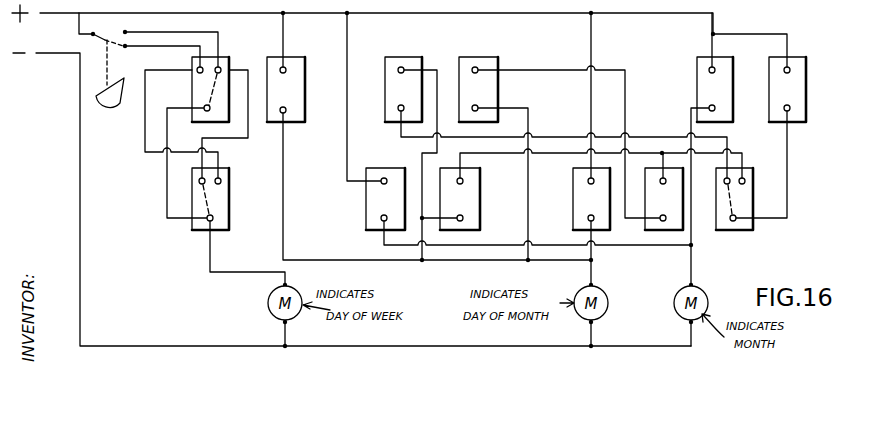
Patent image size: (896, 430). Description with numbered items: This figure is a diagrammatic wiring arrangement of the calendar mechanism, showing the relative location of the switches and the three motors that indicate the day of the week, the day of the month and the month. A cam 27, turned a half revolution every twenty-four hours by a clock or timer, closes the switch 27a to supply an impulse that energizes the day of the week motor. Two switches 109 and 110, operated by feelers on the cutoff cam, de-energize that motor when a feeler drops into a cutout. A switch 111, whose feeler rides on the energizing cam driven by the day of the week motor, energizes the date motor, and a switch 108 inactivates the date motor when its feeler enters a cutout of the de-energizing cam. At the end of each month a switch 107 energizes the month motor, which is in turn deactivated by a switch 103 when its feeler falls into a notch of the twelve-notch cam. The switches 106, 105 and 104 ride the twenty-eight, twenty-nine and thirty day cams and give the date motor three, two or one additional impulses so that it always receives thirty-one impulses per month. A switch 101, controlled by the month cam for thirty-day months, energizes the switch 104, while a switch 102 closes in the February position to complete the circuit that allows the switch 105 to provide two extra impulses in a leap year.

The cam 27 is at (111, 99).
The switch 27a is at (107, 38).
The switch 101 is at (734, 232).
The switch 102 is at (807, 87).
The switch 103 is at (702, 77).
The switch 104 is at (478, 62).
The switch 105 is at (482, 205).
The switch 106 is at (386, 60).
The switch 107 is at (368, 208).
The switch 108 is at (573, 198).
The switch 109 is at (227, 58).
The switch 110 is at (230, 188).
The switch 111 is at (298, 62).